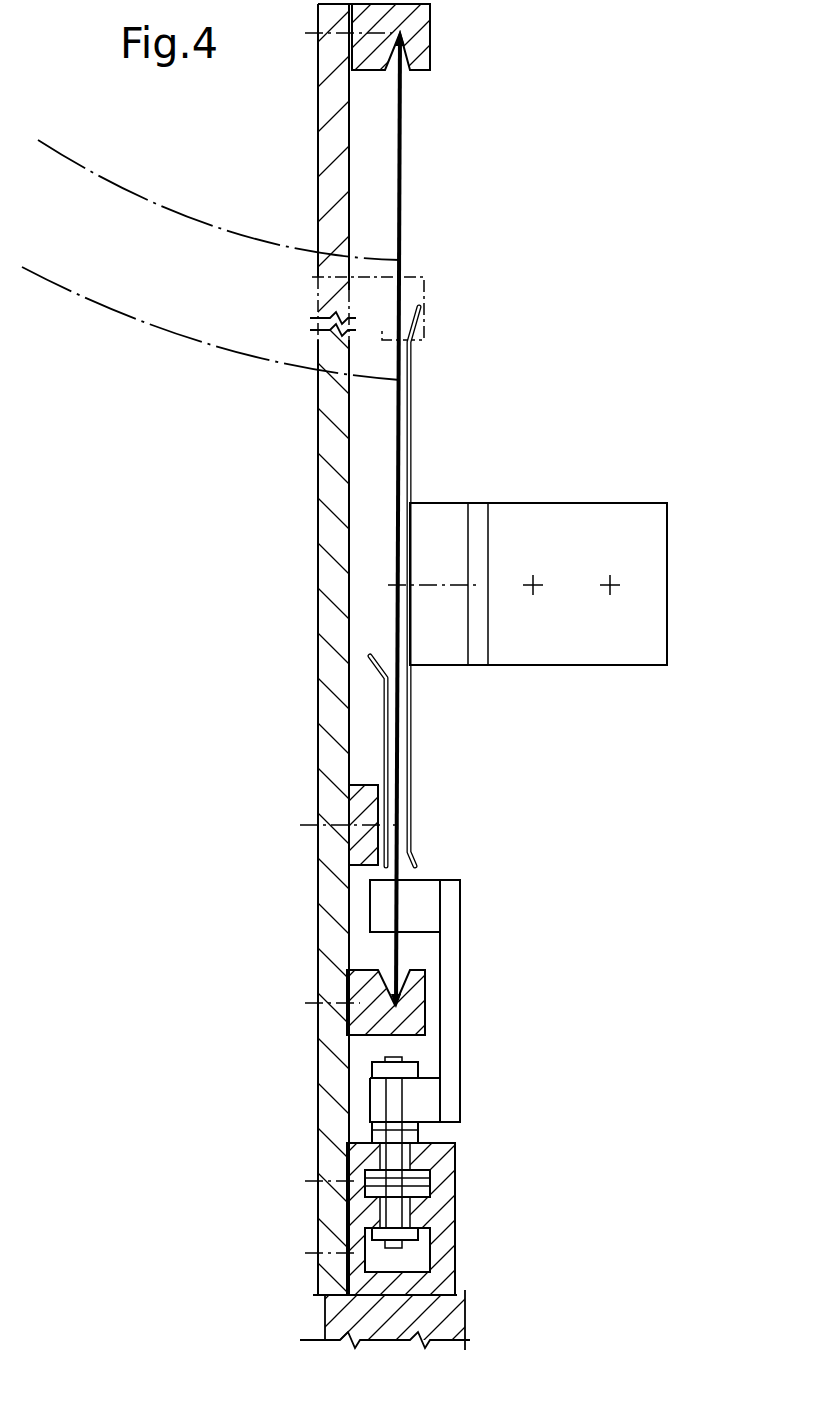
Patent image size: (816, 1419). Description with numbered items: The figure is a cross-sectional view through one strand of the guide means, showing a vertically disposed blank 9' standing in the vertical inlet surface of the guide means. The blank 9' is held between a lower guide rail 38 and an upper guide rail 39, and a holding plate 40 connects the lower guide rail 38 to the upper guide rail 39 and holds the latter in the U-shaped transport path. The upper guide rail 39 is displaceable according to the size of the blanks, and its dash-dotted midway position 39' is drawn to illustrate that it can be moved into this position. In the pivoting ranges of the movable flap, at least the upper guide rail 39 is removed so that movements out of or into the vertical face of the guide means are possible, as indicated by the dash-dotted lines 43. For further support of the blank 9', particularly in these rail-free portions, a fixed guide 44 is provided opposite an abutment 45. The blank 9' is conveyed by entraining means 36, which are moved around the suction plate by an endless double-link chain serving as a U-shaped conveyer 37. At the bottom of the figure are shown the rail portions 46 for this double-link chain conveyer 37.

The blank 9' is at (423, 519).
The entraining means 36 is at (426, 902).
The conveyer 37 is at (393, 1175).
The lower guide rail 38 is at (408, 1015).
The upper guide rail 39 is at (408, 37).
The dash-dotted position of the upper guide rail 39' is at (402, 303).
The holding plate 40 is at (336, 583).
The dash-dotted lines 43 is at (129, 322).
The fixed guide 44 is at (411, 460).
The abutment 45 is at (384, 718).
The rail portions 46 is at (440, 1208).